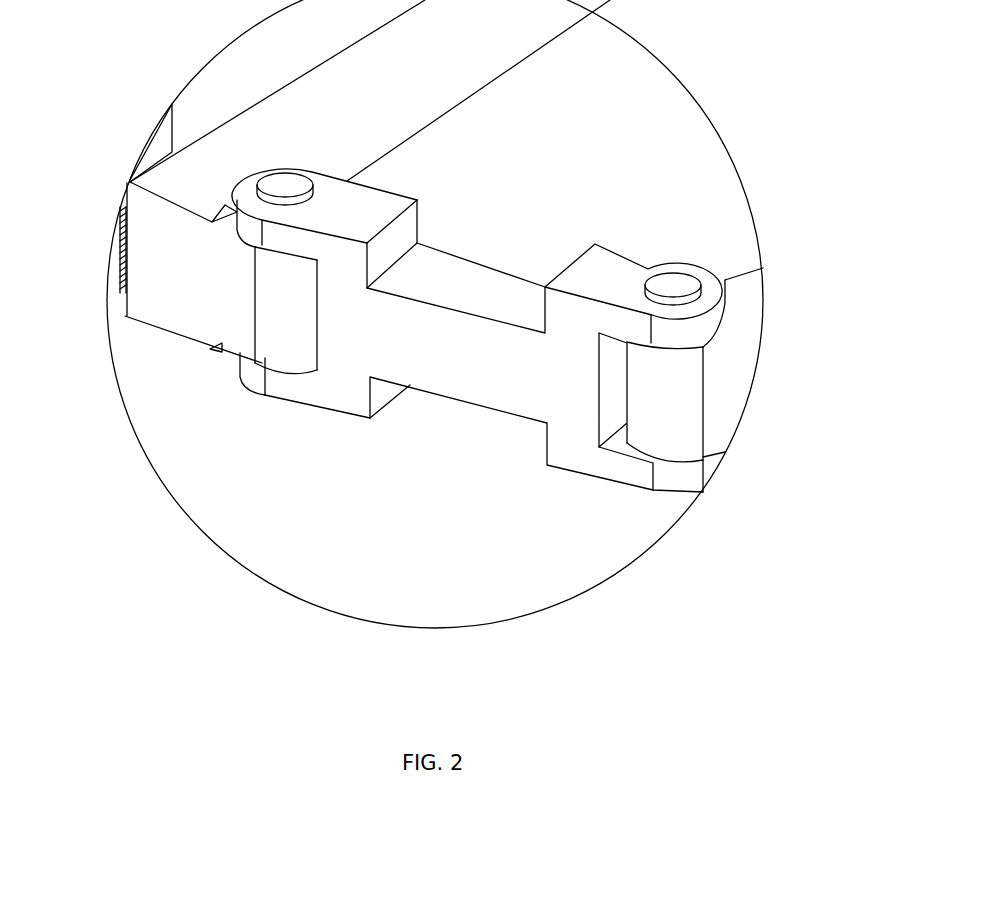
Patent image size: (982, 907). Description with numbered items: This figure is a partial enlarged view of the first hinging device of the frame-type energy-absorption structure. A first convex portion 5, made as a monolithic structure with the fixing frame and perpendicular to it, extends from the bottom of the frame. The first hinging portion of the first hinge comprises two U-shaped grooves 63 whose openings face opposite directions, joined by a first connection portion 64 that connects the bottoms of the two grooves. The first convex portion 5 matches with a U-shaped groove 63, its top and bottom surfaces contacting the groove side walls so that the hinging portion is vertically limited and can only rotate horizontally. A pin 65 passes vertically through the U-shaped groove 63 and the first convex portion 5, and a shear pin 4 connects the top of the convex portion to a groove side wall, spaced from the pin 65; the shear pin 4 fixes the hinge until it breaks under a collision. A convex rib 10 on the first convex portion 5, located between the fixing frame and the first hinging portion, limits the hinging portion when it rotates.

The shear pin 4 is at (705, 300).
The first convex portion 5 is at (222, 312).
The convex rib 10 is at (213, 222).
The U-shaped groove 63 is at (333, 390).
The first connection portion 64 is at (470, 275).
The pin 65 is at (673, 284).